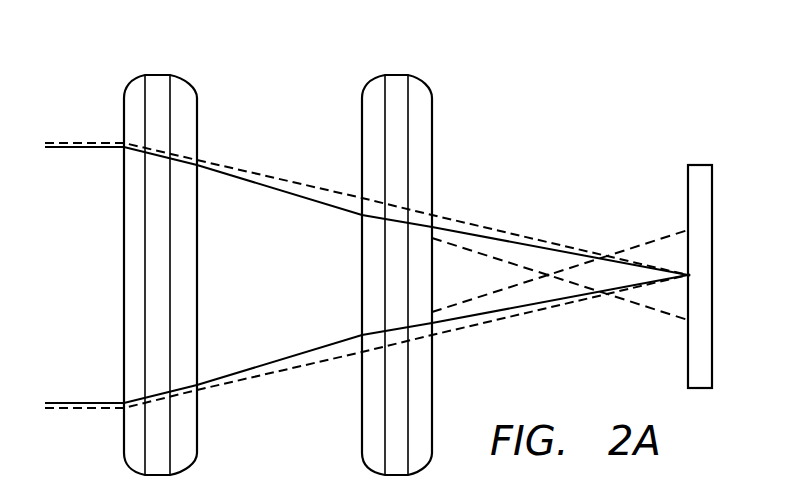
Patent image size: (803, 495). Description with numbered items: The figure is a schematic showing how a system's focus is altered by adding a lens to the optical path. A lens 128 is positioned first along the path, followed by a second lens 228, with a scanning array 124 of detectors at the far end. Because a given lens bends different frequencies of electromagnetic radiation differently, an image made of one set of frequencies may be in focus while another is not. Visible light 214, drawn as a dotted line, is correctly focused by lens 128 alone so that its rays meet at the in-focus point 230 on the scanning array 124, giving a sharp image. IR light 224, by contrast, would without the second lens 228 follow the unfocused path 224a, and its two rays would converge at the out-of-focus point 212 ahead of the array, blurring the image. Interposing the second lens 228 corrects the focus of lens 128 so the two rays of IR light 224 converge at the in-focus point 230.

The lens 128 is at (158, 73).
The second lens 228 is at (398, 73).
The scanning array 124 is at (700, 165).
The visible light 214 is at (273, 178).
The IR light 224 is at (277, 188).
The unfocused path 224a is at (648, 242).
The out-of-focus point 212 is at (548, 264).
The in-focus point 230 is at (702, 275).